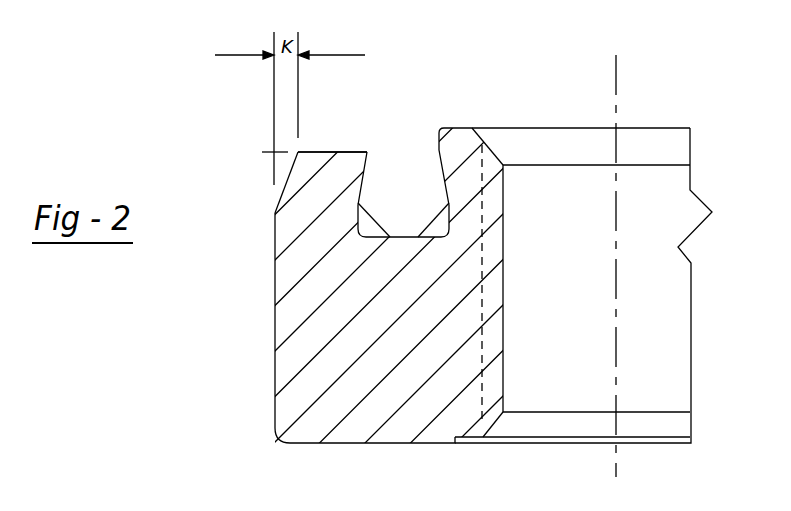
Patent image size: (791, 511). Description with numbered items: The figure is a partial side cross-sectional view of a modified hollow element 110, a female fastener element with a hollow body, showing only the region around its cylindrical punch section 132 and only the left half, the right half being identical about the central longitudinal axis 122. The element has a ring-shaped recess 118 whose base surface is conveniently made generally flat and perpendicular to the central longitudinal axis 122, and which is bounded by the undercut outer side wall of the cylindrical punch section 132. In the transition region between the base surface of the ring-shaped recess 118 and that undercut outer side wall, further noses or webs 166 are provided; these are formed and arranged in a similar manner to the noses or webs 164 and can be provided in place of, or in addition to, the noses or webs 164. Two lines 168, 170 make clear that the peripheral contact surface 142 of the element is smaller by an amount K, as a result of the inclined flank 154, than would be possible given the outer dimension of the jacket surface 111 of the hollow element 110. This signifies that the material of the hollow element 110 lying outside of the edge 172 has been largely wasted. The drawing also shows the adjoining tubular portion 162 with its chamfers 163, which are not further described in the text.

The hollow element 110 is at (275, 320).
The jacket surface 111 is at (275, 404).
The ring-shaped recess 118 is at (414, 191).
The central longitudinal axis 122 is at (616, 72).
The cylindrical punch section 132 is at (453, 129).
The peripheral contact surface 142 is at (320, 152).
The inclined flank 154 is at (288, 170).
The cylindrical tube portion 162 is at (497, 338).
The chamfer 163 is at (488, 142).
The noses or webs 164 is at (368, 232).
The noses or webs 166 is at (443, 232).
The line 168 is at (275, 172).
The line 170 is at (283, 152).
The edge 172 is at (299, 153).